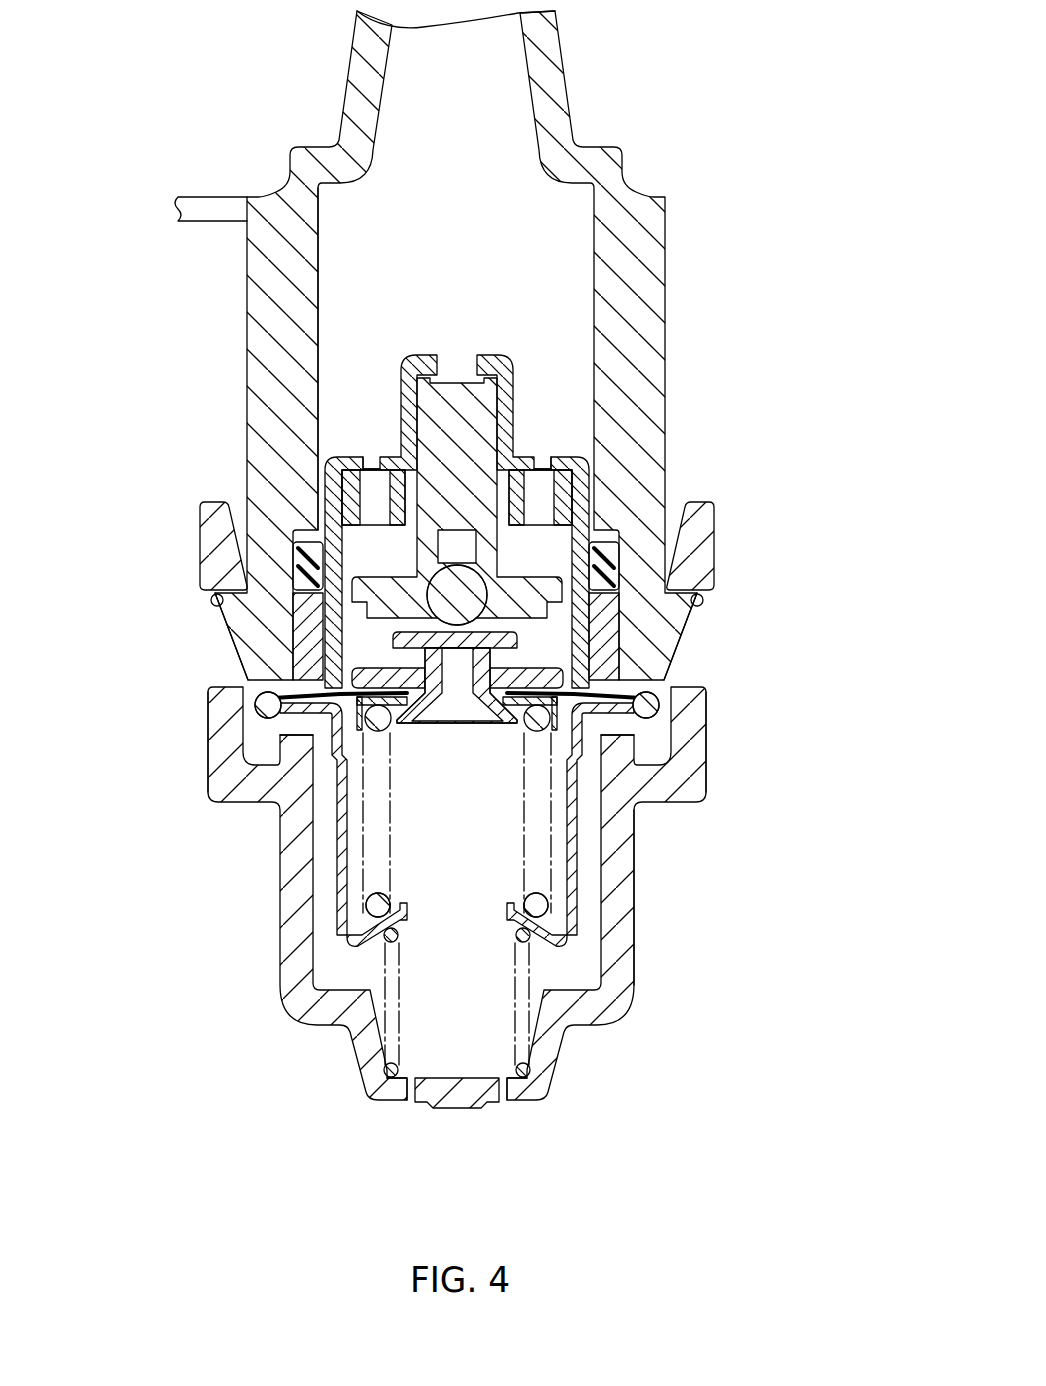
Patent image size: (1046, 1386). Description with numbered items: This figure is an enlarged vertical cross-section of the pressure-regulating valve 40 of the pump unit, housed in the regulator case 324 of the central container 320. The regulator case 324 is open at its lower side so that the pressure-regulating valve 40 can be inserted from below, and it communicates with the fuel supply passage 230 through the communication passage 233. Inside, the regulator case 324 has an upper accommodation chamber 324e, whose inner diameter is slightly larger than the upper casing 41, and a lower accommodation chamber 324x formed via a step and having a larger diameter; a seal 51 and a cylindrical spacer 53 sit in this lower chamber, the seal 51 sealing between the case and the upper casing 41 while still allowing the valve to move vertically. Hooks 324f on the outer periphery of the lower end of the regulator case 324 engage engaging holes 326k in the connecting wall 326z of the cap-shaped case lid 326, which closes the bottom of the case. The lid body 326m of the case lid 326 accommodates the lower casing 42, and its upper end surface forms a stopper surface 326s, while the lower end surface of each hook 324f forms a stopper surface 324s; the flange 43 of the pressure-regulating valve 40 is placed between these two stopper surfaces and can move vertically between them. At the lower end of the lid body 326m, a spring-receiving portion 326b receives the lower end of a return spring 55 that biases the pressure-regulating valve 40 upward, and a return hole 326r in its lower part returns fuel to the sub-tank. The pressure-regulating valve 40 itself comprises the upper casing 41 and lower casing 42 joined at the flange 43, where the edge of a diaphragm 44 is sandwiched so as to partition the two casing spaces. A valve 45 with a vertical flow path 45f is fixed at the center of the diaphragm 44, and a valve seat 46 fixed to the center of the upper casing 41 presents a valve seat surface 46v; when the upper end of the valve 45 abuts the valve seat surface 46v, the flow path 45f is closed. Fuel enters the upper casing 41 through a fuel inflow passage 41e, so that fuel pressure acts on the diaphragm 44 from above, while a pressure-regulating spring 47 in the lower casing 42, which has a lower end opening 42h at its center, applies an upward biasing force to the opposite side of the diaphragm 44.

The fuel supply passage 230 is at (557, 45).
The communication passage 233 is at (493, 70).
The central container 320 is at (695, 292).
The regulator case 324 is at (668, 240).
The upper accommodation chamber 324e is at (324, 272).
The hook 324f is at (670, 625).
The stopper surface 324s is at (660, 698).
The lower accommodation chamber 324x is at (292, 600).
The case lid 326 is at (648, 877).
The spring-receiving portion 326b is at (547, 1063).
The engaging hole 326k is at (210, 602).
The lid body 326m is at (617, 913).
The return hole 326r is at (407, 1083).
The stopper surface 326s is at (630, 707).
The connecting wall 326z is at (210, 697).
The pressure-regulating valve 40 is at (481, 696).
The upper casing 41 is at (330, 480).
The fuel inflow passage 41e is at (373, 452).
The lower casing 42 is at (340, 880).
The lower end opening 42h is at (407, 905).
The flange 43 is at (275, 707).
The diaphragm 44 is at (323, 660).
The valve 45 is at (455, 729).
The flow path 45f is at (445, 673).
The valve seat 46 is at (460, 575).
The valve seat surface 46v is at (508, 648).
The pressure-regulating spring 47 is at (537, 718).
The seal 51 is at (622, 548).
The spacer 53 is at (612, 618).
The return spring 55 is at (390, 975).